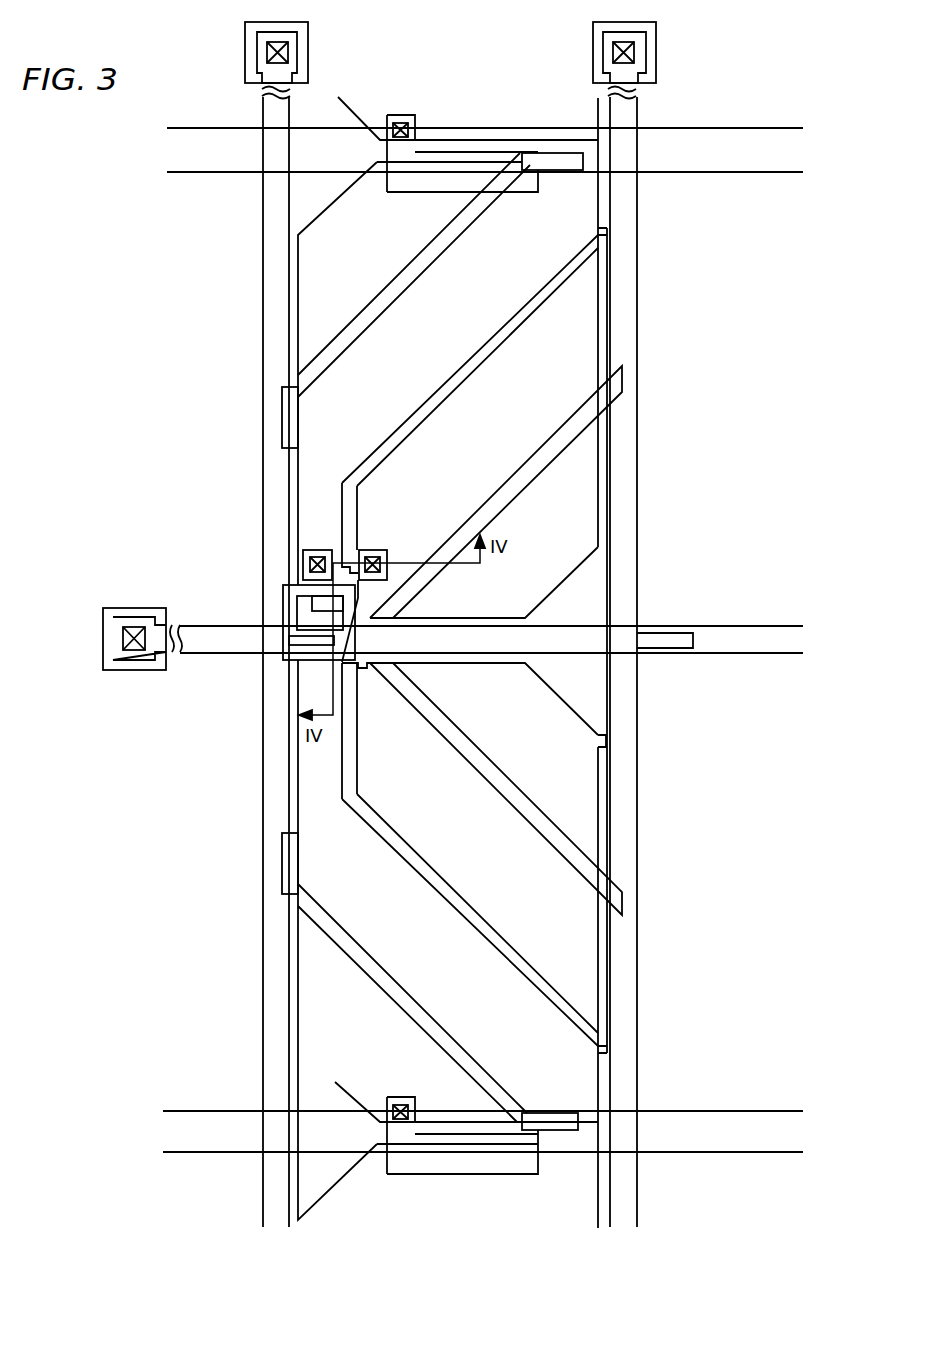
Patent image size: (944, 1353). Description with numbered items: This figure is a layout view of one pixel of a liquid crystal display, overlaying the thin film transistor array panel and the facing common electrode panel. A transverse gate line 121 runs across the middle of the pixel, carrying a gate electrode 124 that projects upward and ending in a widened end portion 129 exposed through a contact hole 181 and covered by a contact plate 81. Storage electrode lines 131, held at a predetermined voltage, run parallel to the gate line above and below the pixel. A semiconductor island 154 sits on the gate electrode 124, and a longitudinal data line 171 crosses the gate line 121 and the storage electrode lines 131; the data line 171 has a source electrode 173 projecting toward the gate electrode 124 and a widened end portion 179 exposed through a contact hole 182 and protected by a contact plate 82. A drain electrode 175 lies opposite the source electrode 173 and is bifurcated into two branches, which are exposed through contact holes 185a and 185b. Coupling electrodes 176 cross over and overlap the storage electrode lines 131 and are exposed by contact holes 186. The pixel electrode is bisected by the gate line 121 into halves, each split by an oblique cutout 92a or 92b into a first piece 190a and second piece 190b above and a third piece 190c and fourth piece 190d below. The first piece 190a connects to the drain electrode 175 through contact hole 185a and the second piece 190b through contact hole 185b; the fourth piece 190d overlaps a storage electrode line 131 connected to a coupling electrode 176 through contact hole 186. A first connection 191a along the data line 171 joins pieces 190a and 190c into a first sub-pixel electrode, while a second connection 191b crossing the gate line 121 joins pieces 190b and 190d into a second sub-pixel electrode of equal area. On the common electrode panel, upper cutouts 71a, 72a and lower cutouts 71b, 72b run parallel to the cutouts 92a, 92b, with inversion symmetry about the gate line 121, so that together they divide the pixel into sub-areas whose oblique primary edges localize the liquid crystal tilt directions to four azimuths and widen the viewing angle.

The gate line 121 is at (196, 654).
The gate electrode 124 is at (296, 610).
The widened end portion of gate line 129 is at (127, 662).
The storage electrode line 131 is at (203, 173).
The semiconductor island 154 is at (282, 641).
The data line 171 is at (263, 240).
The source electrode 173 is at (320, 658).
The drain electrode 175 is at (308, 593).
The coupling electrode 176 is at (478, 140).
The widened end portion of data line 179 is at (257, 43).
The contact hole 181 is at (137, 627).
The contact hole 182 is at (289, 52).
The contact hole 185a is at (316, 550).
The contact hole 185b is at (373, 550).
The contact hole 186 is at (400, 115).
The first piece of pixel electrode 190a is at (296, 357).
The second piece of pixel electrode 190b is at (608, 452).
The third piece of pixel electrode 190c is at (608, 835).
The fourth piece of pixel electrode 190d is at (296, 913).
The first connection 191a is at (608, 249).
The second connection 191b is at (371, 632).
The upper cutout of common electrode 71a is at (506, 502).
The lower cutout of common electrode 71b is at (504, 779).
The upper cutout of common electrode 72a is at (416, 285).
The lower cutout of common electrode 72b is at (412, 997).
The contact plate 81 is at (148, 671).
The contact plate 82 is at (245, 68).
The cutout of pixel electrode 92a is at (478, 368).
The cutout of pixel electrode 92b is at (470, 908).